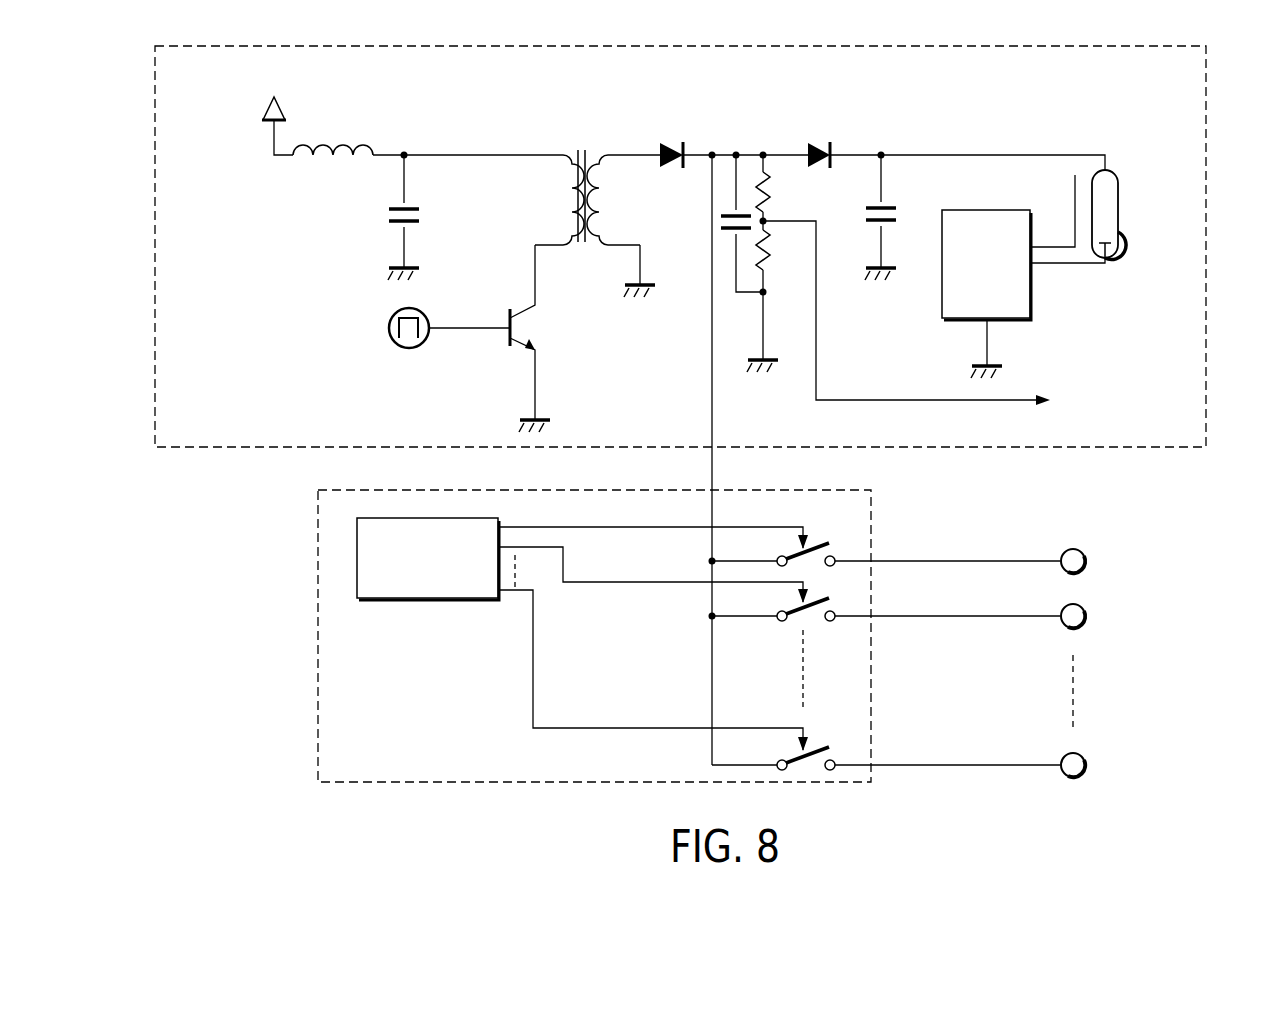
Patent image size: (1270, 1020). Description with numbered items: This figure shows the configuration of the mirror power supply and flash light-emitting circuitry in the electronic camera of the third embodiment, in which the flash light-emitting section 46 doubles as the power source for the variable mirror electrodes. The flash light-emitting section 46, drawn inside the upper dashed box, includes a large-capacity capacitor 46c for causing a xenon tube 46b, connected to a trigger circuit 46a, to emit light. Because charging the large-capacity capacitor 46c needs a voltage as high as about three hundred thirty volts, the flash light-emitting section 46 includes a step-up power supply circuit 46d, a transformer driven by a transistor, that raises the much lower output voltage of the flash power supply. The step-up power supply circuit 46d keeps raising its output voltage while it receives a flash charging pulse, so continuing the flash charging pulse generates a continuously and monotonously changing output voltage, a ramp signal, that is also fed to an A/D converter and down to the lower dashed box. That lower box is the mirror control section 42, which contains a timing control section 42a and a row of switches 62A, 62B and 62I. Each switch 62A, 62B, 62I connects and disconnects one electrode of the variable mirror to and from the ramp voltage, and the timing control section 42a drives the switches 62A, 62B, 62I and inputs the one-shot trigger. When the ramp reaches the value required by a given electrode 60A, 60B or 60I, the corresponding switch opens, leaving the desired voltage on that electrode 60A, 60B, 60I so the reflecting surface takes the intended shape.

The flash light-emitting section 46 is at (1208, 149).
The trigger circuit 46a is at (1034, 283).
The xenon tube 46b is at (1120, 238).
The large-capacity capacitor 46c is at (900, 212).
The step-up power supply circuit 46d is at (589, 142).
The mirror control section 42 is at (873, 683).
The timing control section 42a is at (442, 604).
The switch 62A is at (812, 547).
The switch 62B is at (812, 602).
The switch 62I is at (812, 751).
The electrode 60A is at (1087, 561).
The electrode 60B is at (1087, 616).
The electrode 60I is at (1087, 765).